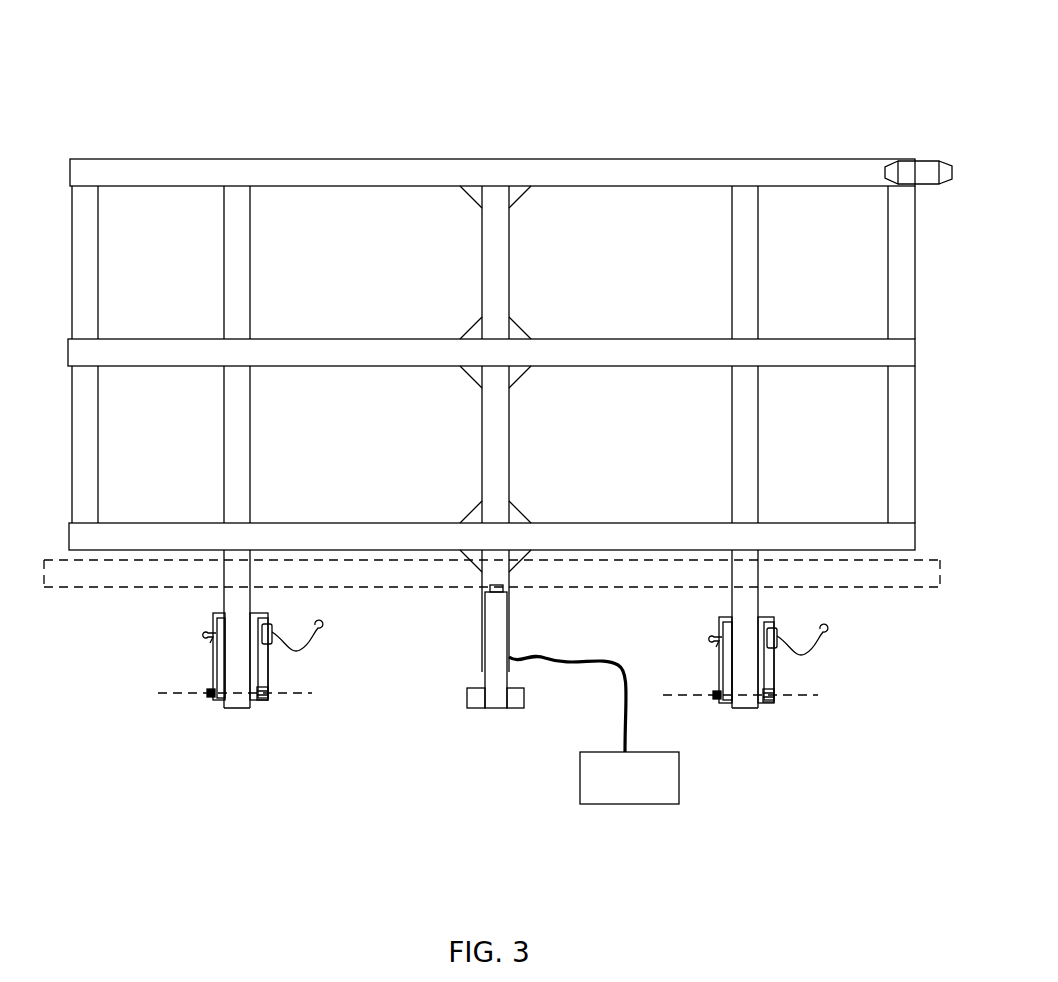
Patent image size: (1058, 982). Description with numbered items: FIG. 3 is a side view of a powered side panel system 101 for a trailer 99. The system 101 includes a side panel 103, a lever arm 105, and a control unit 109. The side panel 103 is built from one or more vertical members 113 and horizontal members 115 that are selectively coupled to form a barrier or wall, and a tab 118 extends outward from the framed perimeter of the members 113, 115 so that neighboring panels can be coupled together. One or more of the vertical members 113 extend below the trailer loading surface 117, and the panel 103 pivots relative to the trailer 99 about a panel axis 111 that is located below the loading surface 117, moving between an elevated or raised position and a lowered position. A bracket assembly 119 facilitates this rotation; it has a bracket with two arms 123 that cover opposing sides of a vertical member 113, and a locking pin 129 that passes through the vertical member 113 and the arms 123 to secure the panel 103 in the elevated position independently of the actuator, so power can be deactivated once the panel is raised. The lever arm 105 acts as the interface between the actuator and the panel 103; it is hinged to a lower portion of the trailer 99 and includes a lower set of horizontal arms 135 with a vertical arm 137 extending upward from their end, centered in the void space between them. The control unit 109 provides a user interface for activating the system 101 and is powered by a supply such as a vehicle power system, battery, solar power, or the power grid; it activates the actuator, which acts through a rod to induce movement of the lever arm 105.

The trailer 99 is at (100, 587).
The powered side panel system 101 is at (316, 55).
The side panel 103 is at (479, 145).
The lever arm 105 is at (481, 731).
The control unit 109 is at (645, 790).
The panel axis 111 is at (184, 697).
The vertical member 113 is at (224, 298).
The horizontal member 115 is at (692, 159).
The trailer loading surface 117 is at (922, 558).
The tab 118 is at (924, 170).
The bracket assembly 119 is at (274, 723).
The arm 123 is at (213, 662).
The locking pin 129 is at (777, 651).
The horizontal arm 135 is at (467, 703).
The vertical arm 137 is at (492, 650).